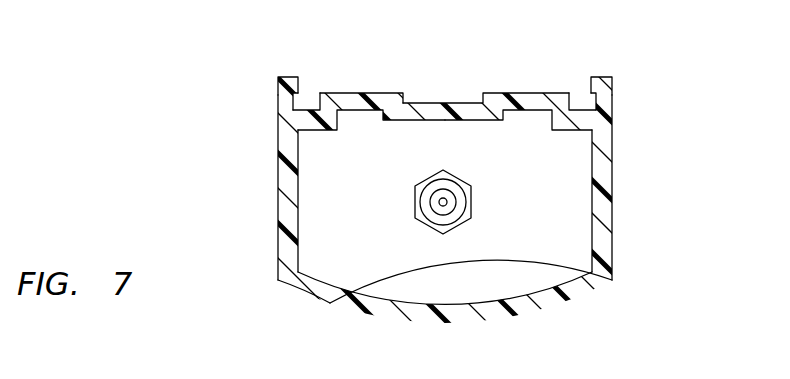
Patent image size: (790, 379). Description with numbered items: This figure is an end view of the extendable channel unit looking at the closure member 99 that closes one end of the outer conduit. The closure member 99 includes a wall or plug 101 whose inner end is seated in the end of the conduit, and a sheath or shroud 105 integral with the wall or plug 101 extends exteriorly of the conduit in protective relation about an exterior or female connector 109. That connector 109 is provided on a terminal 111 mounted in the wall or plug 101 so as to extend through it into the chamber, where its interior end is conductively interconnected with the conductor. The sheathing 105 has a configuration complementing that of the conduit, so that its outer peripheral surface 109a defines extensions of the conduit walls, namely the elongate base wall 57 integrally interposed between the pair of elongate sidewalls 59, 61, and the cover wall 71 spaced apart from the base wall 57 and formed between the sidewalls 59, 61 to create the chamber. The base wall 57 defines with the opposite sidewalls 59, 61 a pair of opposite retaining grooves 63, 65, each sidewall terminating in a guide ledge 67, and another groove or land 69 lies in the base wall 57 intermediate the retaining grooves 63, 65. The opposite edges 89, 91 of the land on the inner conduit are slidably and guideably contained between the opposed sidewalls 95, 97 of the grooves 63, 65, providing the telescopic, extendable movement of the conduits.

The base wall 57 is at (473, 102).
The sidewall 59 is at (613, 203).
The sidewall 61 is at (278, 215).
The retaining groove 63 is at (295, 101).
The retaining groove 65 is at (586, 106).
The guide ledge 67 is at (288, 76).
The intermediate groove or land 69 is at (406, 94).
The cover wall 71 is at (380, 320).
The edge of land 89 is at (596, 124).
The edge of land 91 is at (292, 128).
The groove sidewall 95 is at (583, 105).
The groove sidewall 97 is at (318, 105).
The closure member 99 is at (185, 127).
The wall or plug 101 is at (537, 243).
The sheath or shroud 105 is at (302, 292).
The exterior connector 109 is at (462, 198).
The outer peripheral surface 109a is at (278, 173).
The terminal 111 is at (457, 177).